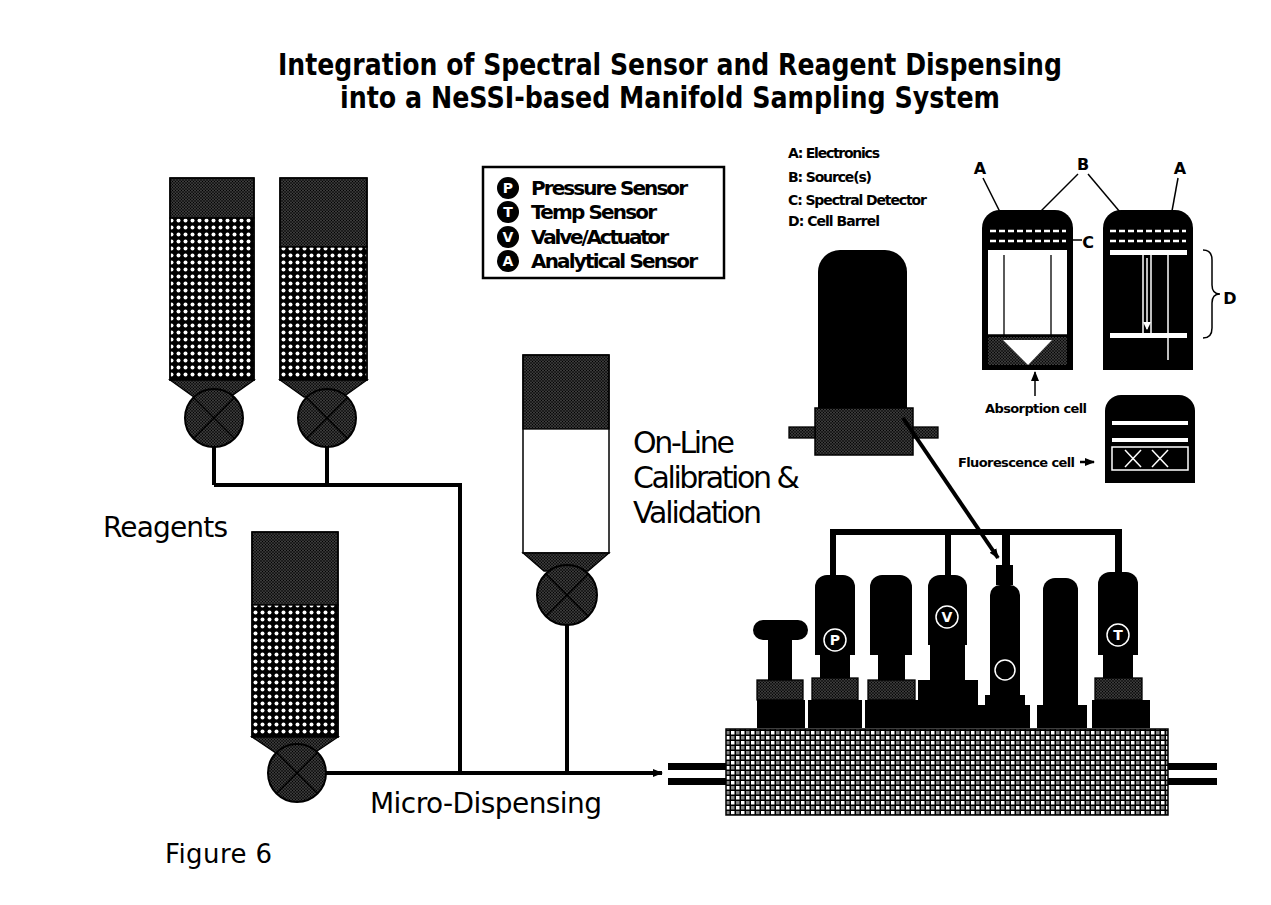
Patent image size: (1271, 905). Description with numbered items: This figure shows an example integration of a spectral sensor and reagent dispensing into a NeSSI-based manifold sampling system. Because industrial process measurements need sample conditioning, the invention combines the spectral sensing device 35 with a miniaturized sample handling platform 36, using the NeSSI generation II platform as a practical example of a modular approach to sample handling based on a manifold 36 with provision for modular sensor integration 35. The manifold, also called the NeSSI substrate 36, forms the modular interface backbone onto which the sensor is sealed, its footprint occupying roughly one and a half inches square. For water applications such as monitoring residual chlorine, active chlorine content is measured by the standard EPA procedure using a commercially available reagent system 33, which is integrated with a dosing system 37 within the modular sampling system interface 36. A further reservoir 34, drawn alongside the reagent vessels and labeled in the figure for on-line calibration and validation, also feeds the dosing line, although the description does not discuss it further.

The reagent system 33 is at (190, 316).
The on-line calibration and validation reservoir 34 is at (540, 464).
The spectral sensing device 35 is at (1016, 580).
The miniaturized sample handling platform 36 is at (811, 797).
The dosing system 37 is at (508, 773).